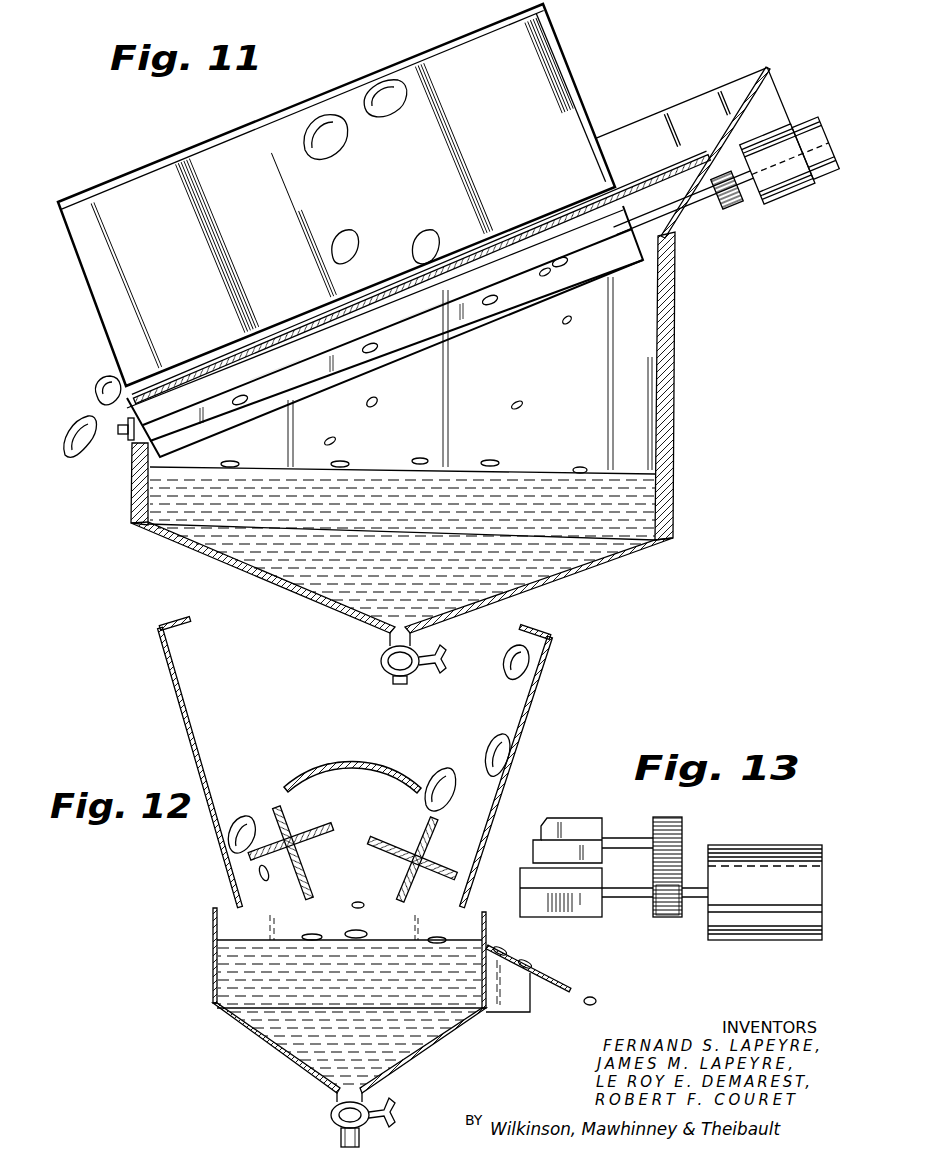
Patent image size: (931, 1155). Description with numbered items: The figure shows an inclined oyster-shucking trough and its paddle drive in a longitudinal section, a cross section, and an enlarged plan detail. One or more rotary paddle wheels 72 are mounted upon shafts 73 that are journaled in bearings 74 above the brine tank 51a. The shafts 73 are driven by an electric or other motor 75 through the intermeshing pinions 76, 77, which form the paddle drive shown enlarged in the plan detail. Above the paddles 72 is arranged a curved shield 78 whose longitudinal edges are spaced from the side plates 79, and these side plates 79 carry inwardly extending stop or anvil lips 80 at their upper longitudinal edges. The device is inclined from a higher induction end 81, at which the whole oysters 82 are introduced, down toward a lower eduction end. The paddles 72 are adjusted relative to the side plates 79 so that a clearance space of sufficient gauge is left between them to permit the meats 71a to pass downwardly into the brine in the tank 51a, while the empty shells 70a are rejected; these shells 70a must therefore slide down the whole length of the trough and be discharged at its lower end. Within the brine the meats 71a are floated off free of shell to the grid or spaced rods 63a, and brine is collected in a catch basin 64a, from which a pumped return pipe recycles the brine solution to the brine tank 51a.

In FIG. 11, the brine tank 51a is at (672, 487).
In FIG. 12, the brine tank 51a is at (277, 1053).
In FIG. 12, the grid or spaced rods 63a is at (582, 966).
In FIG. 12, the catch basin 64a is at (513, 1013).
In FIG. 11, the empty shells 70a is at (98, 390).
In FIG. 12, the empty shells 70a is at (245, 815).
In FIG. 11, the meats 71a is at (362, 356).
In FIG. 12, the meats 71a is at (263, 878).
In FIG. 11, the rotary paddle wheels 72 is at (468, 310).
In FIG. 12, the rotary paddle wheels 72 is at (378, 830).
In FIG. 13, the rotary paddle wheels 72 is at (520, 872).
In FIG. 11, the shafts 73 is at (701, 203).
In FIG. 13, the shafts 73 is at (622, 850).
In FIG. 11, the bearings 74 is at (122, 438).
In FIG. 11, the motor 75 is at (806, 117).
In FIG. 13, the motor 75 is at (776, 857).
In FIG. 11, the pinion 76 is at (742, 208).
In FIG. 13, the pinion 76 is at (668, 918).
In FIG. 13, the pinion 77 is at (686, 830).
In FIG. 11, the curved shield 78 is at (205, 352).
In FIG. 12, the curved shield 78 is at (353, 764).
In FIG. 11, the side plates 79 is at (563, 75).
In FIG. 12, the side plates 79 is at (195, 738).
In FIG. 11, the stop or anvil lips 80 is at (173, 162).
In FIG. 12, the stop or anvil lips 80 is at (182, 625).
In FIG. 11, the induction end 81 is at (752, 84).
In FIG. 11, the whole oysters 82 is at (347, 146).
In FIG. 12, the whole oysters 82 is at (516, 682).